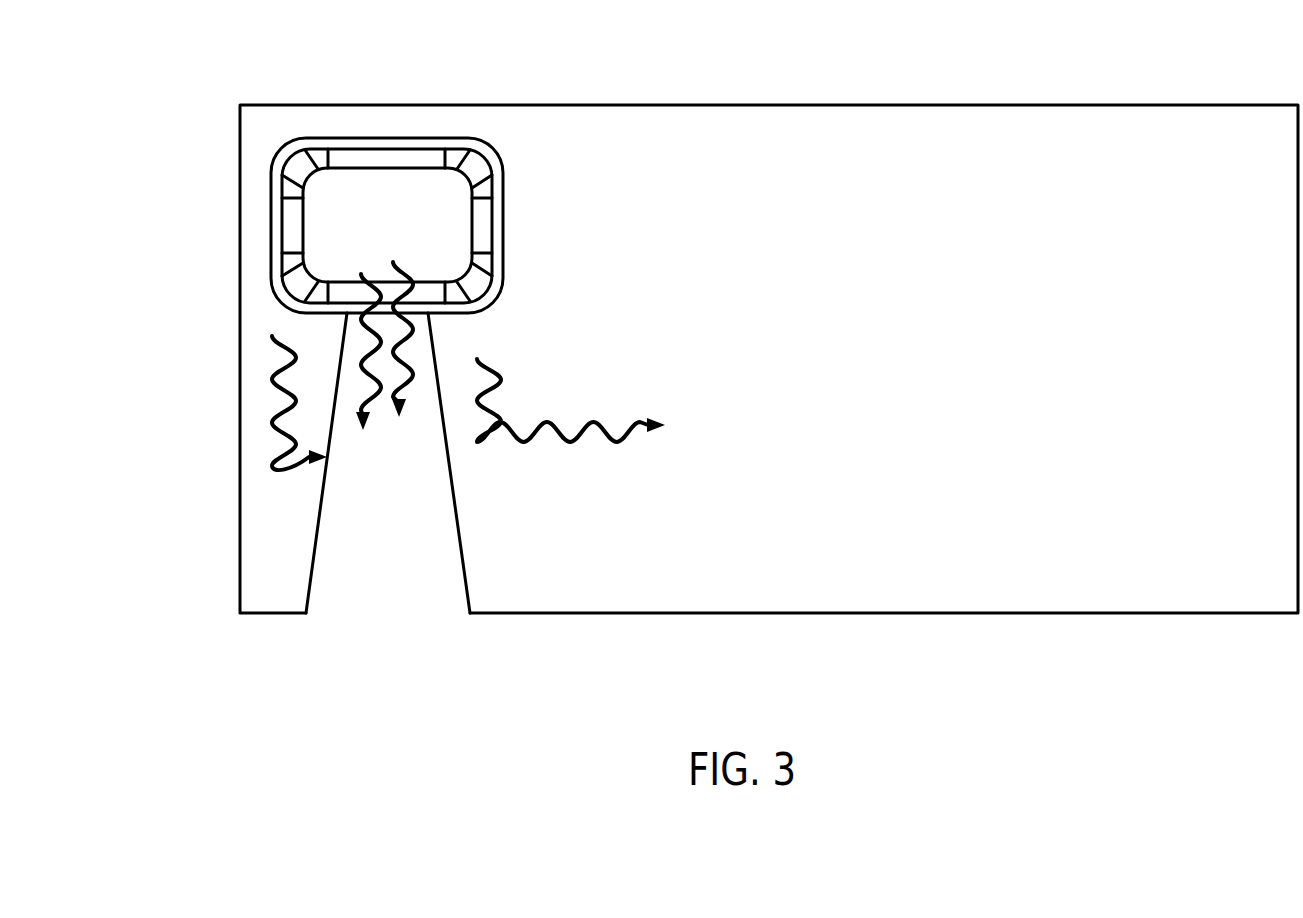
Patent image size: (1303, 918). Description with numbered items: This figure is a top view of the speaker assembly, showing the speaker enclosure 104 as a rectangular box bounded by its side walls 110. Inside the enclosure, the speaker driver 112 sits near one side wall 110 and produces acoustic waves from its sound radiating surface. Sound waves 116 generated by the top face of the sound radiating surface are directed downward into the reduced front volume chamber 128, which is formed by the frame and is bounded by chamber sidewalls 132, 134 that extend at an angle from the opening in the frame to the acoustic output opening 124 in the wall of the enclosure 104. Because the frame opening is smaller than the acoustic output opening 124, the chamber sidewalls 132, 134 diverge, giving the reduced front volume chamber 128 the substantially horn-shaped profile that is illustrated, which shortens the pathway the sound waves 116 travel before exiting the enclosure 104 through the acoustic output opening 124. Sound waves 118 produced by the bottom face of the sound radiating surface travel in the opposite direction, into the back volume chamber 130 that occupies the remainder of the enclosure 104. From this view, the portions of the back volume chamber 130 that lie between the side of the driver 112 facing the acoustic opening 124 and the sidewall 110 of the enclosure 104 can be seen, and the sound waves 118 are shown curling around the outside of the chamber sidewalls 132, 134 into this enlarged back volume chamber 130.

The speaker enclosure 104 is at (1096, 95).
The side wall 110 is at (277, 615).
The speaker driver 112 is at (407, 244).
The sound waves 116 is at (413, 330).
The sound waves 118 is at (272, 378).
The acoustic output opening 124 is at (389, 625).
The reduced front volume chamber 128 is at (372, 495).
The back volume chamber 130 is at (780, 162).
The chamber sidewall 132 is at (458, 530).
The chamber sidewall 134 is at (317, 513).